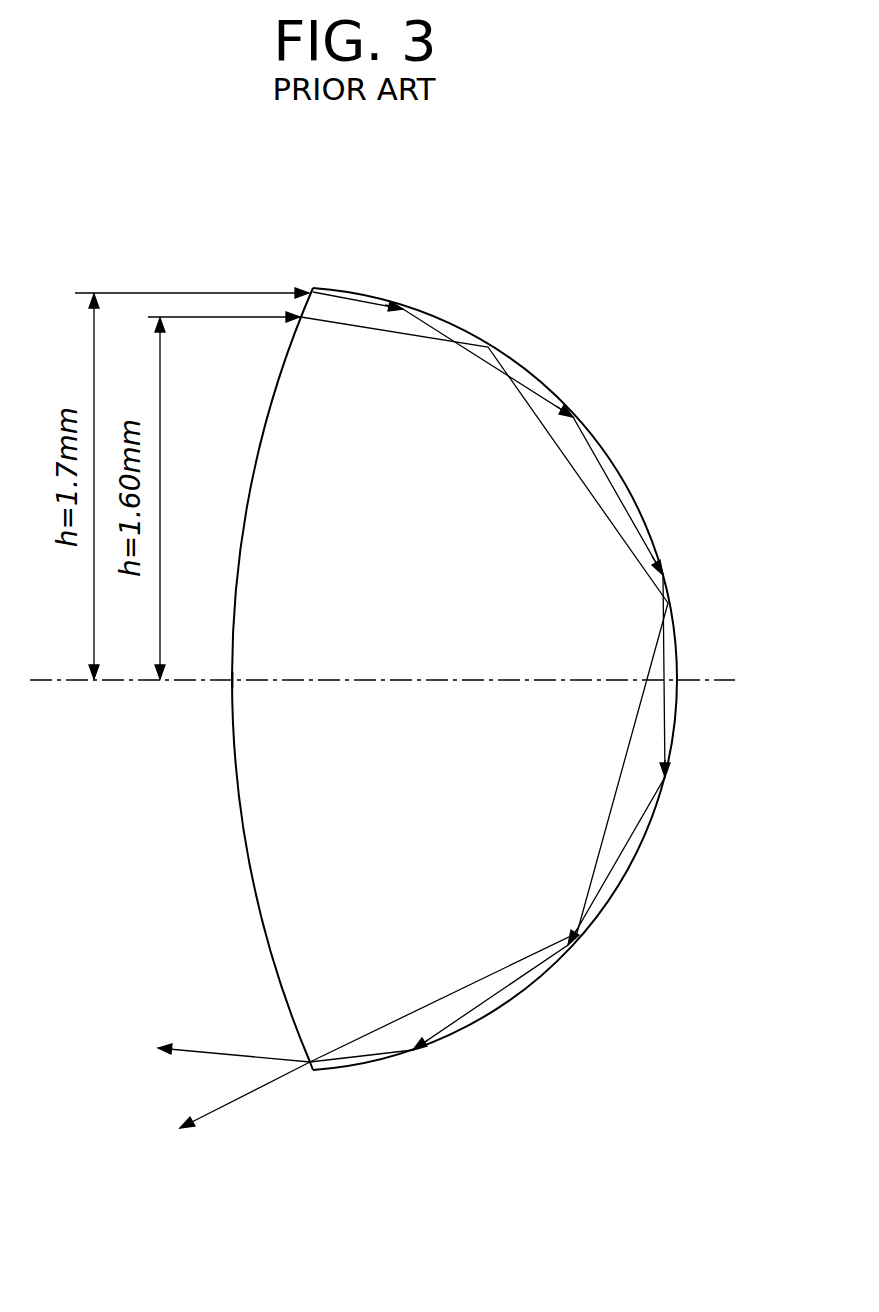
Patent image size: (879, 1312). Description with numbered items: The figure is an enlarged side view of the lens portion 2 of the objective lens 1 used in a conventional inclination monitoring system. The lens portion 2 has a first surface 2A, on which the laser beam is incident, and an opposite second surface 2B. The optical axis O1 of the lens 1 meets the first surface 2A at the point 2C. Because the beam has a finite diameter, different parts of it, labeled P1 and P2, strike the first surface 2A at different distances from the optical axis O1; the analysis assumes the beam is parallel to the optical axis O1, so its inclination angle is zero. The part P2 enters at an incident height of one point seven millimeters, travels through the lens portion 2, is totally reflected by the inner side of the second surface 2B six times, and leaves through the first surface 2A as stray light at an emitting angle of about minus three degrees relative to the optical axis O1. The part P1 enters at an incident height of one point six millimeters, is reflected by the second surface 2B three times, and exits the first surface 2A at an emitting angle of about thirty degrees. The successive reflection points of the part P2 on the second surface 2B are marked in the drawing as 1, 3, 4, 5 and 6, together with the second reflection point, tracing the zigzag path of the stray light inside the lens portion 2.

The lens portion 2 is at (423, 679).
The first surface 2A is at (244, 523).
The second surface 2B is at (634, 500).
The point 2C is at (230, 680).
The optical axis O1 is at (433, 684).
The part of the beam P1 is at (230, 326).
The part of the beam P2 is at (227, 292).
The lens 1 is at (405, 294).
The third reflection point 3 is at (672, 573).
The fourth reflection point 4 is at (676, 777).
The fifth reflection point 5 is at (579, 957).
The sixth reflection point 6 is at (426, 1061).